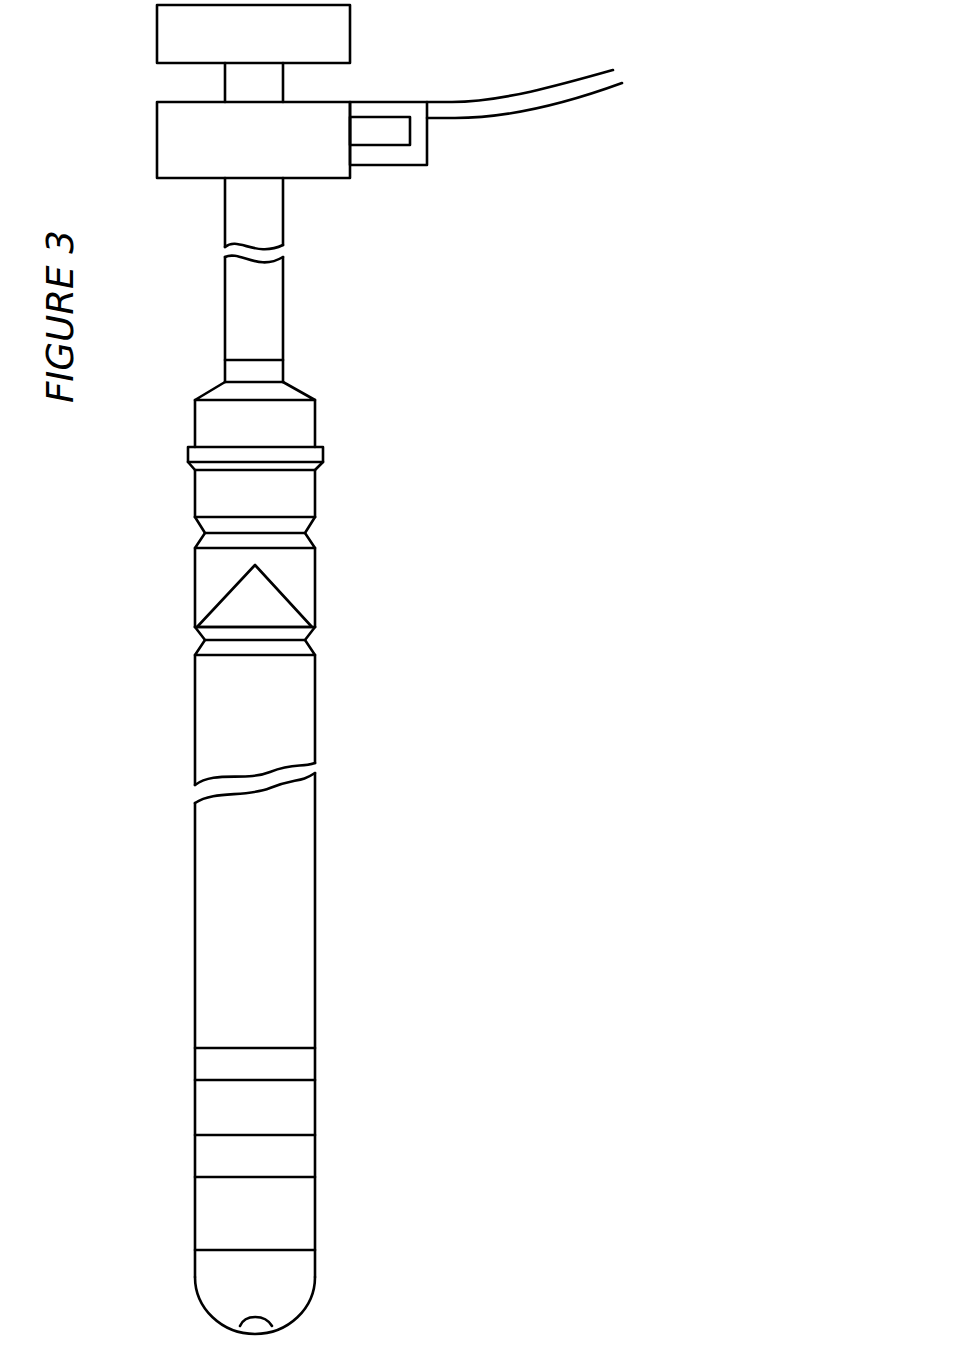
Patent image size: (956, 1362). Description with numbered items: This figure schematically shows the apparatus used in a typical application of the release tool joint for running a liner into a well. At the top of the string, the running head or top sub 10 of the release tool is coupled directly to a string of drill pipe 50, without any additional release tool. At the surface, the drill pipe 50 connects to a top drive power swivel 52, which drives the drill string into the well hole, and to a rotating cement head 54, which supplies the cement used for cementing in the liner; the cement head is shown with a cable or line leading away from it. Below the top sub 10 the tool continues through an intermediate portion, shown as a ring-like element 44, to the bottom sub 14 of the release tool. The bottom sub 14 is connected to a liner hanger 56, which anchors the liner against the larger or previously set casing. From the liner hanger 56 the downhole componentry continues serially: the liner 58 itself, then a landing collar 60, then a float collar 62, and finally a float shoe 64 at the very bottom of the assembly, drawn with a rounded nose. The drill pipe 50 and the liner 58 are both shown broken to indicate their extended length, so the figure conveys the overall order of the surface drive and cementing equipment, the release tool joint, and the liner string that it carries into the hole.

The running head or top sub 10 is at (300, 429).
The bottom sub 14 is at (293, 495).
The annular ring / flange 44 is at (323, 457).
The string of drill pipe 50 is at (285, 310).
The top drive power swivel 52 is at (350, 32).
The rotating cement head 54 is at (318, 110).
The liner hanger 56 is at (293, 590).
The liner 58 is at (293, 700).
The landing collar 60 is at (303, 1068).
The float collar 62 is at (303, 1163).
The float shoe 64 is at (295, 1278).